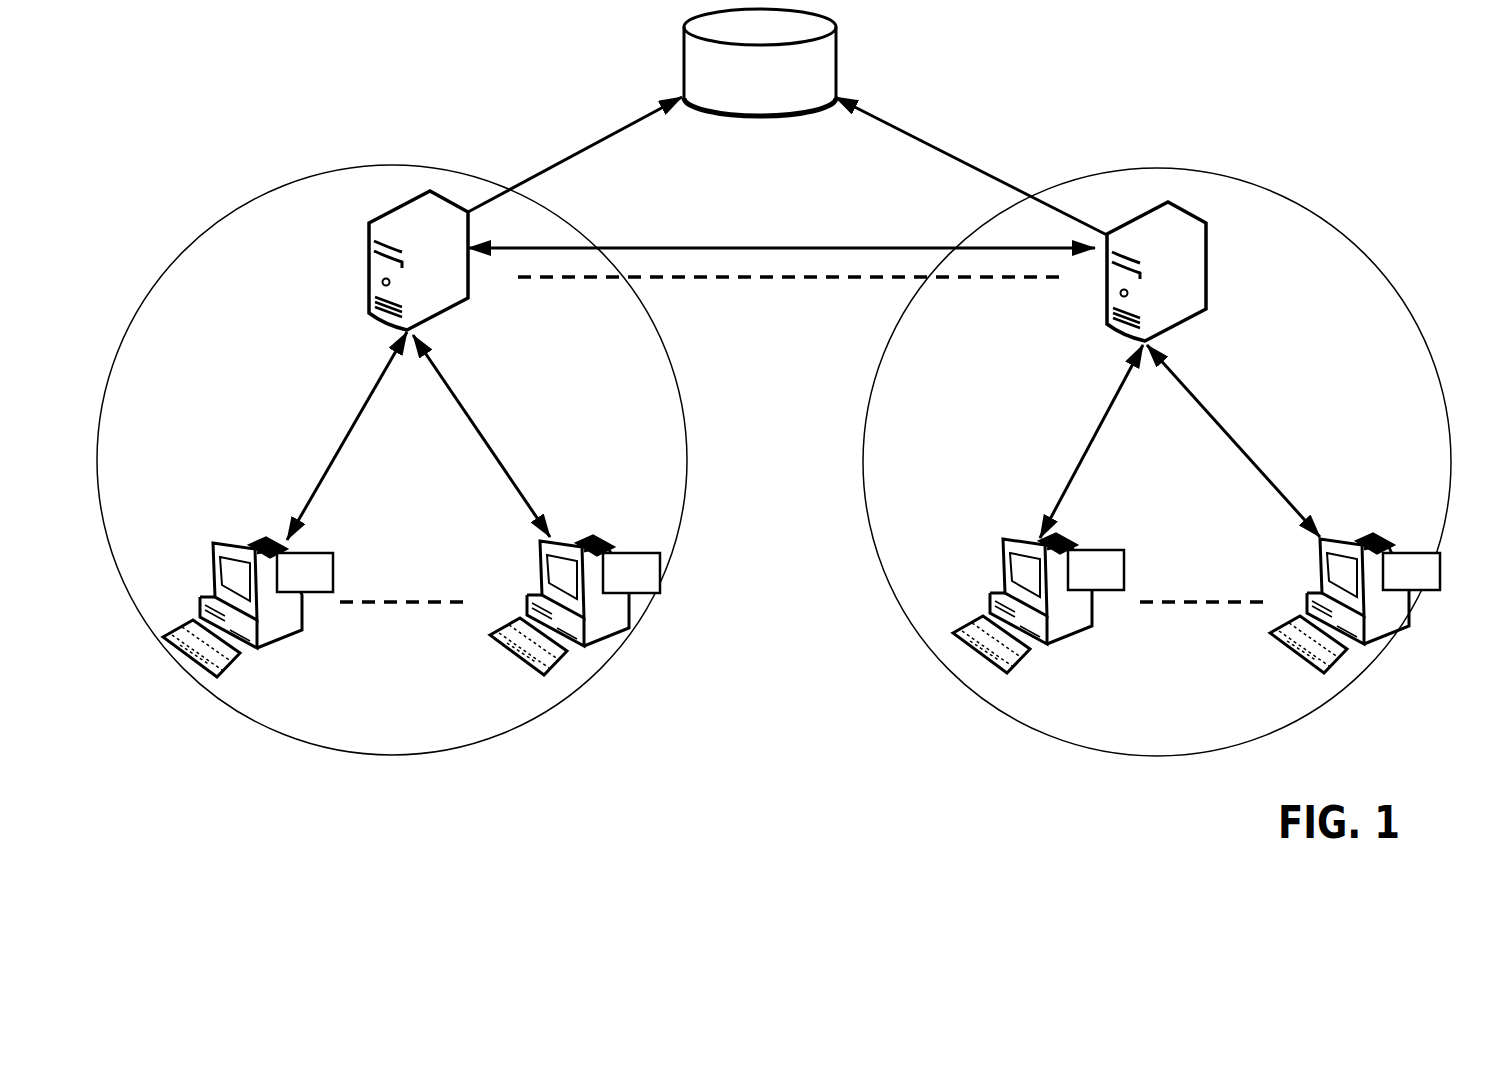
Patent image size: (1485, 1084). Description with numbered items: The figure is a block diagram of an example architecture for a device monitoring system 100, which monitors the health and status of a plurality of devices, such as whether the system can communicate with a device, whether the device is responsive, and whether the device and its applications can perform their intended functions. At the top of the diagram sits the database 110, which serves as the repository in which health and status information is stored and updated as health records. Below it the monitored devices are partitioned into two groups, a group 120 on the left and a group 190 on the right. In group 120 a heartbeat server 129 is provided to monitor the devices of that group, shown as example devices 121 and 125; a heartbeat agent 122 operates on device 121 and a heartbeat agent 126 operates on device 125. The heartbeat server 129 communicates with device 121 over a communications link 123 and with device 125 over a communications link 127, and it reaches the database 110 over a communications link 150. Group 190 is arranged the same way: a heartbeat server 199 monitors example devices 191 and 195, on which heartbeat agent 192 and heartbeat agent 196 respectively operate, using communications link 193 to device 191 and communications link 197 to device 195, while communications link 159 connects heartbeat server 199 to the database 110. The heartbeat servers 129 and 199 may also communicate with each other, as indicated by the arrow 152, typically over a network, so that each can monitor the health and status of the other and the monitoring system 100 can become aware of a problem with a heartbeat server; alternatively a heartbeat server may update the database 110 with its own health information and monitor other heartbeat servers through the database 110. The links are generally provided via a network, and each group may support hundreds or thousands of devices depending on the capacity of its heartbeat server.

The device monitoring system 100 is at (688, 822).
The database 110 is at (700, 66).
The group 120 is at (243, 237).
The device 121 is at (240, 543).
The heartbeat agent 122 is at (320, 567).
The communications link 123 is at (355, 425).
The device 125 is at (570, 540).
The heartbeat agent 126 is at (650, 570).
The communications link 127 is at (505, 475).
The heartbeat server 129 is at (412, 225).
The communications link 150 is at (582, 150).
The communications link 152 is at (768, 248).
The communications link 159 is at (937, 150).
The group 190 is at (1000, 698).
The device 191 is at (1003, 540).
The heartbeat agent 192 is at (1103, 560).
The communications link 193 is at (1085, 452).
The device 195 is at (1273, 650).
The heartbeat agent 196 is at (1410, 565).
The communications link 197 is at (1248, 455).
The heartbeat server 199 is at (1190, 293).